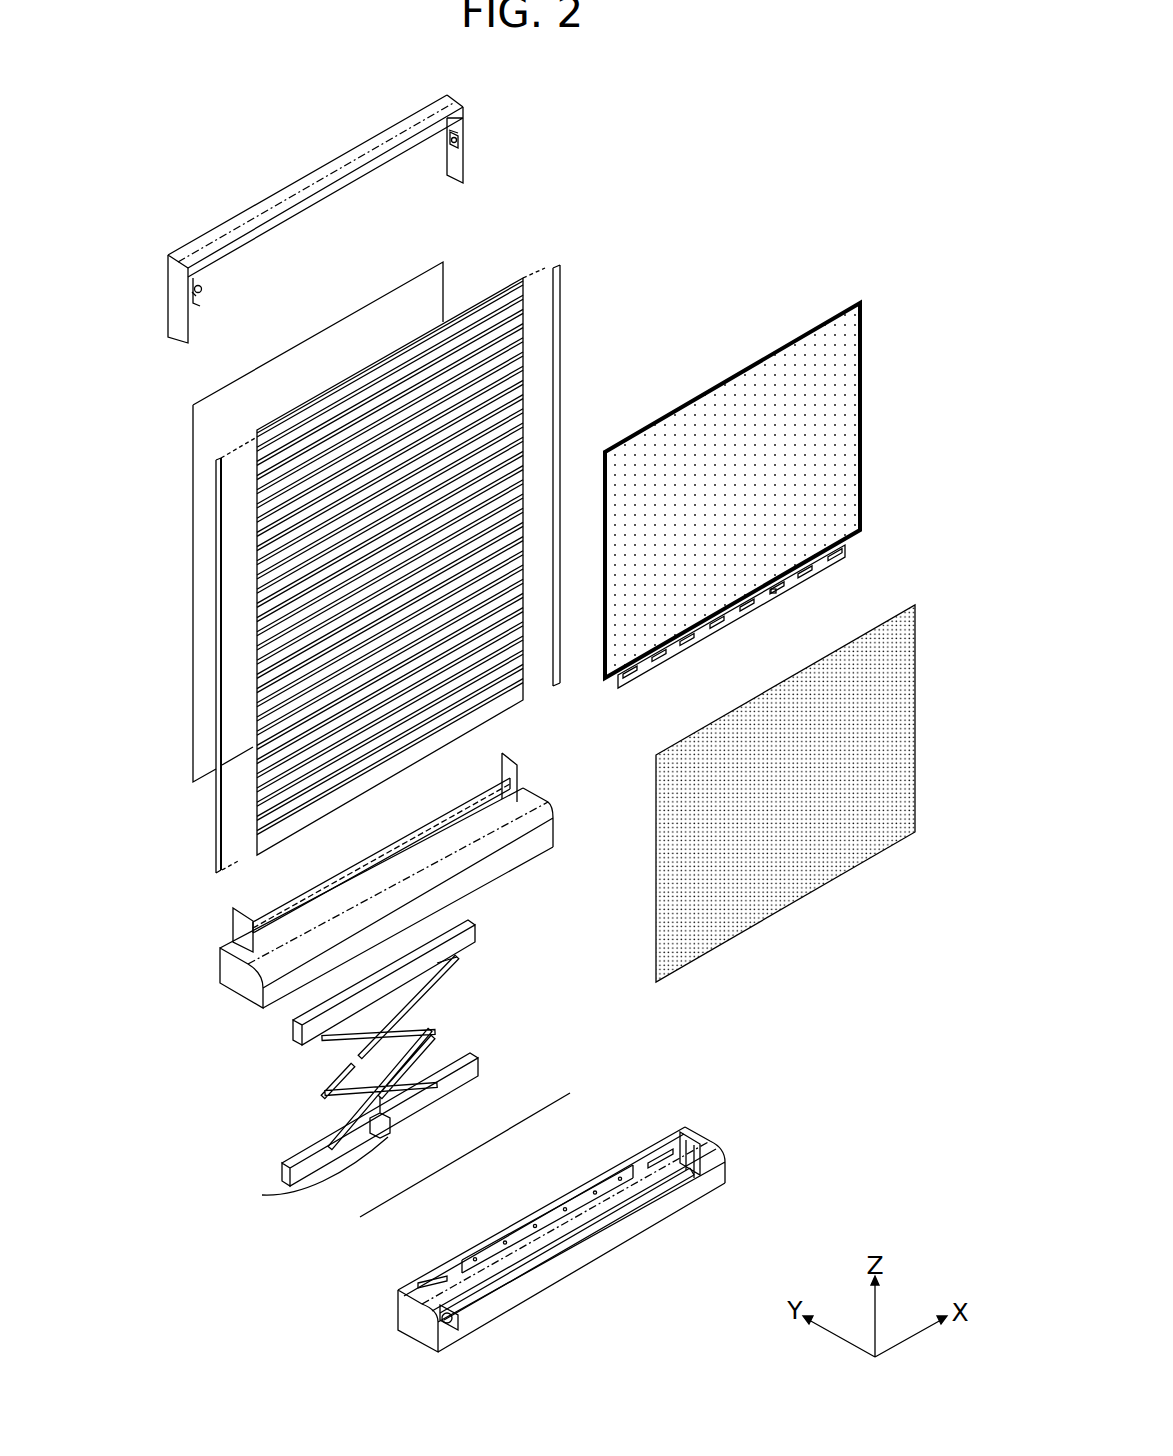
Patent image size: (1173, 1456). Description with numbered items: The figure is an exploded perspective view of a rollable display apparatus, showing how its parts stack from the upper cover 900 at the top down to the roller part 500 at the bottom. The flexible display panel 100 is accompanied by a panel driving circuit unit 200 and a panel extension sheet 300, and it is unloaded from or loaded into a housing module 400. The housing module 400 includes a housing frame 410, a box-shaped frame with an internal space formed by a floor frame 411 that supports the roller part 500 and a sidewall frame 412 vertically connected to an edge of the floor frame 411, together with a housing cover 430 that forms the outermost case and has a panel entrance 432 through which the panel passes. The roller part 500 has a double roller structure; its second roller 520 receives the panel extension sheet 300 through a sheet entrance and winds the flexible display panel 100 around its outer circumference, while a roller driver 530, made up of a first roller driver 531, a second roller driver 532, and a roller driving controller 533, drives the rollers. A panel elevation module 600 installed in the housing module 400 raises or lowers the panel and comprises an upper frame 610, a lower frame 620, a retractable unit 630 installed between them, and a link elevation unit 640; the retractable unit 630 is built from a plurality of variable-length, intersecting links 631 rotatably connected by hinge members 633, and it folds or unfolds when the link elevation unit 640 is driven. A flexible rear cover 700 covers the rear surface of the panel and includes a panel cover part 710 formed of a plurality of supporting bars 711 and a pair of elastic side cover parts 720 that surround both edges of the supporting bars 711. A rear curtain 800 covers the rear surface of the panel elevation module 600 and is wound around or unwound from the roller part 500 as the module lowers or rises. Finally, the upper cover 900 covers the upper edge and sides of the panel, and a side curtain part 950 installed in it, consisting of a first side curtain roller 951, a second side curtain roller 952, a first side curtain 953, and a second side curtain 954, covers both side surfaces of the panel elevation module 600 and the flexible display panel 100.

The flexible display panel 100 is at (745, 365).
The panel driving circuit unit 200 is at (856, 556).
The panel extension sheet 300 is at (813, 872).
The housing module 400 is at (530, 1065).
The housing frame 410 is at (671, 1239).
The floor frame 411 is at (712, 1196).
The sidewall frame 412 is at (726, 1172).
The housing cover 430 is at (232, 972).
The panel entrance 432 is at (400, 860).
The roller part 500 is at (645, 1212).
The second roller 520 is at (620, 1218).
The roller driver 530 is at (523, 1201).
The first roller driver 531 is at (672, 1135).
The second roller driver 532 is at (410, 1283).
The roller driving controller 533 is at (553, 1202).
The panel elevation module 600 is at (338, 1065).
The upper frame 610 is at (291, 1033).
The lower frame 620 is at (300, 1148).
The retractable unit 630 is at (367, 1053).
The links 631 is at (431, 988).
The hinge members 633 is at (390, 1098).
The link elevation unit 640 is at (300, 1173).
The flexible rear cover 700 is at (320, 569).
The panel cover part 710 is at (348, 560).
The supporting bars 711 is at (255, 657).
The side cover parts 720 is at (215, 597).
The rear curtain 800 is at (206, 431).
The upper cover 900 is at (346, 515).
The side curtain part 950 is at (440, 150).
The first side curtain roller 951 is at (199, 293).
The second side curtain roller 952 is at (454, 139).
The first side curtain 953 is at (177, 332).
The second side curtain 954 is at (460, 167).